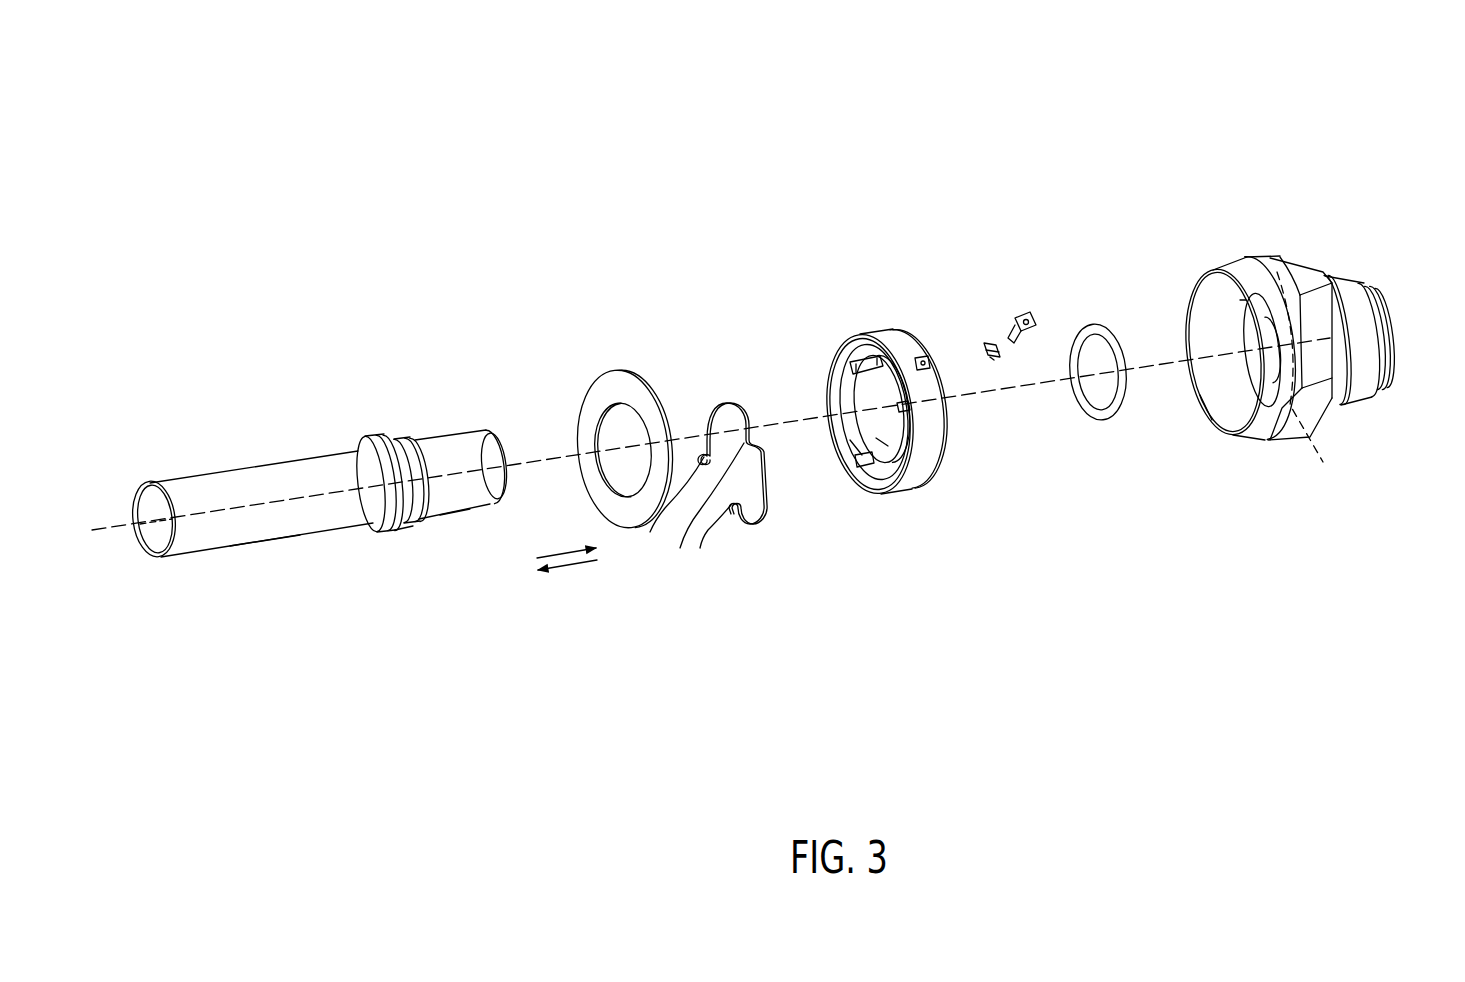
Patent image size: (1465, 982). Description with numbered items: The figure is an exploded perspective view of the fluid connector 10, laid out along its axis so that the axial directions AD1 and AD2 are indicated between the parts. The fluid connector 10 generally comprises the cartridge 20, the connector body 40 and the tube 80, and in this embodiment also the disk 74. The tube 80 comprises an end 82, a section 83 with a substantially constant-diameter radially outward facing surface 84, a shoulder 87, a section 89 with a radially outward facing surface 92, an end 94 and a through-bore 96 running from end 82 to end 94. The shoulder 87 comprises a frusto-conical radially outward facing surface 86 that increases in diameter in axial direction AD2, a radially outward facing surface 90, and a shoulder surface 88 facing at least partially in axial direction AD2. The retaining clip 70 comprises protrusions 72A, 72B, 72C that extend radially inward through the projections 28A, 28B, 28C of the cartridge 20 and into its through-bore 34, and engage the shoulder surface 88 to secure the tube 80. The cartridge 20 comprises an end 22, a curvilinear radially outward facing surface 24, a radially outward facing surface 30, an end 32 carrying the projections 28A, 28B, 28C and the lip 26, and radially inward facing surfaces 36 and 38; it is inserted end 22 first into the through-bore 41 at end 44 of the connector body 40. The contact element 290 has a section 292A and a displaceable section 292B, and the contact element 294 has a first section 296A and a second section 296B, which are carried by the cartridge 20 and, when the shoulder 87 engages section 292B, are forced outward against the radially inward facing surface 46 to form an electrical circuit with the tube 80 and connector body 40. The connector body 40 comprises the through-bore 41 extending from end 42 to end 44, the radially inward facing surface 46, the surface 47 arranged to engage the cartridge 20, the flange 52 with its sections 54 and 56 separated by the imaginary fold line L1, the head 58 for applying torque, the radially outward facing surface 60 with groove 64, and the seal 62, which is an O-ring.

The fluid connector 10 is at (226, 272).
The cartridge 20 is at (918, 327).
The end 22 is at (935, 440).
The radially outward facing surface 24 is at (933, 452).
The lip 26 is at (878, 338).
The projection 28A is at (850, 462).
The projection 28B is at (858, 365).
The projection 28C is at (927, 460).
The radially outward facing surface 30 is at (907, 478).
The end 32 is at (843, 395).
The through-bore 34 is at (868, 423).
The radially inward facing surface 36 is at (855, 450).
The radially inward facing surface 38 is at (882, 443).
The connector body 40 is at (1360, 172).
The through-bore 41 is at (1226, 325).
The end 42 is at (1392, 303).
The end 44 is at (1214, 270).
The radially inward facing surface 46 is at (1213, 403).
The surface 47 is at (1258, 382).
The flange 52 is at (1243, 266).
The section 54 is at (1287, 440).
The section 56 is at (1275, 428).
The head 58 is at (1286, 256).
The radially outward facing surface 60 is at (1368, 333).
The seal 62 is at (1098, 296).
The groove 64 is at (1341, 280).
The retaining clip 70 is at (700, 397).
The protrusion 72A is at (660, 537).
The protrusion 72B is at (690, 560).
The protrusion 72C is at (712, 538).
The disk 74 is at (620, 370).
The tube 80 is at (255, 377).
The end 82 is at (505, 455).
The section 83 is at (466, 520).
The radially outward facing surface 84 is at (450, 445).
The radially outward facing surface 86 is at (408, 450).
The shoulder 87 is at (415, 528).
The shoulder surface 88 is at (366, 437).
The section 89 is at (258, 560).
The radially outward facing surface 90 is at (384, 433).
The radially outward facing surface 92 is at (254, 487).
The end 94 is at (148, 548).
The through-bore 96 is at (150, 514).
The contact element 290 is at (996, 378).
The section 292A is at (990, 344).
The section 292B is at (990, 372).
The contact element 294 is at (1025, 285).
The first section 296A is at (1020, 347).
The second section 296B is at (1030, 325).
The axial direction AD1 is at (565, 550).
The axial direction AD2 is at (570, 565).
The fold line L1 is at (1308, 386).